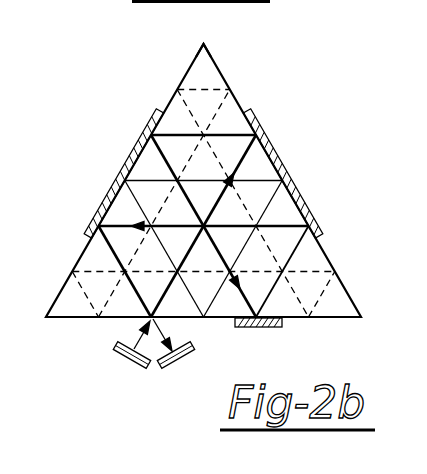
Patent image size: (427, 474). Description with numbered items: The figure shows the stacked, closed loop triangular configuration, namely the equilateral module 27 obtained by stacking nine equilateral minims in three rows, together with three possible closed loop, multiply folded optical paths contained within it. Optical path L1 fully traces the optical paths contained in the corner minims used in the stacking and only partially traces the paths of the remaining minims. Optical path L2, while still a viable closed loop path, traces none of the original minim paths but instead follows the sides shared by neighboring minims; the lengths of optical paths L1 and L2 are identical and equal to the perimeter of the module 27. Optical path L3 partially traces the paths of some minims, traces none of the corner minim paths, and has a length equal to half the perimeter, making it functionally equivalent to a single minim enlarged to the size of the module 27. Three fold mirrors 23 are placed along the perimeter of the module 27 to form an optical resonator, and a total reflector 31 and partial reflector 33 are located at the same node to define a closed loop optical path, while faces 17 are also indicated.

The prism faces 17 is at (94, 227).
The fold mirror 23 is at (118, 167).
The equilateral module 27 is at (219, 57).
The total reflector 31 is at (133, 364).
The partial reflector 33 is at (180, 357).
The optical path L1 is at (222, 78).
The optical path L2 is at (236, 126).
The optical path L3 is at (262, 177).